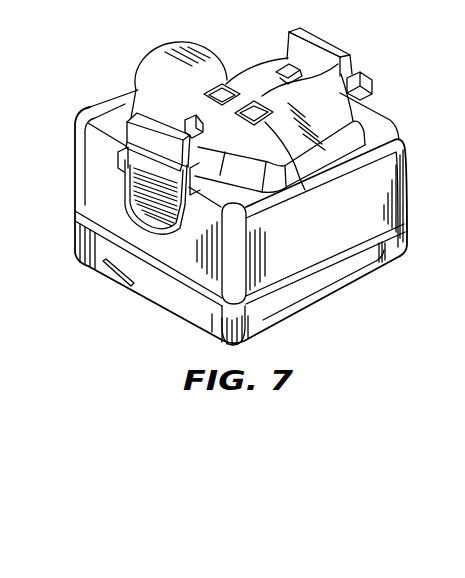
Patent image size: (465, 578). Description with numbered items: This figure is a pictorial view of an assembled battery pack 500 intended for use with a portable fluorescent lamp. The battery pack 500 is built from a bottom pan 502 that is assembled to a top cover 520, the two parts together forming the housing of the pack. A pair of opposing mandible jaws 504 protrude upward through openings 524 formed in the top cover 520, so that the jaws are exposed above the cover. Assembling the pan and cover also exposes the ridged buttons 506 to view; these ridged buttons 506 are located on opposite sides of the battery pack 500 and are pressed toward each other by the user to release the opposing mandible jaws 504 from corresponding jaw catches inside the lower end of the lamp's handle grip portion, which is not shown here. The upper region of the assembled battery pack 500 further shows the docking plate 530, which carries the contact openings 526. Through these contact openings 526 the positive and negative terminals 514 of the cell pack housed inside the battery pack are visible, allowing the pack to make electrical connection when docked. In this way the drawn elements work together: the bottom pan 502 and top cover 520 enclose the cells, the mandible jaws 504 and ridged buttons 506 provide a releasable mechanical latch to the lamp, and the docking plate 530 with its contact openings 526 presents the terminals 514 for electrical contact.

The battery pack 500 is at (346, 299).
The bottom pan 502 is at (180, 302).
The mandible jaws 504 is at (175, 103).
The ridged buttons 506 is at (130, 283).
The positive and negative terminals 514 is at (226, 84).
The top cover 520 is at (85, 106).
The openings 524 is at (116, 163).
The contact openings 526 is at (216, 83).
The docking plate 530 is at (153, 73).